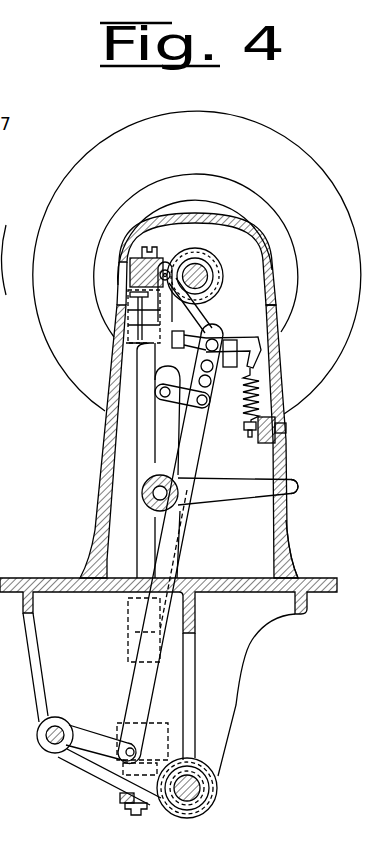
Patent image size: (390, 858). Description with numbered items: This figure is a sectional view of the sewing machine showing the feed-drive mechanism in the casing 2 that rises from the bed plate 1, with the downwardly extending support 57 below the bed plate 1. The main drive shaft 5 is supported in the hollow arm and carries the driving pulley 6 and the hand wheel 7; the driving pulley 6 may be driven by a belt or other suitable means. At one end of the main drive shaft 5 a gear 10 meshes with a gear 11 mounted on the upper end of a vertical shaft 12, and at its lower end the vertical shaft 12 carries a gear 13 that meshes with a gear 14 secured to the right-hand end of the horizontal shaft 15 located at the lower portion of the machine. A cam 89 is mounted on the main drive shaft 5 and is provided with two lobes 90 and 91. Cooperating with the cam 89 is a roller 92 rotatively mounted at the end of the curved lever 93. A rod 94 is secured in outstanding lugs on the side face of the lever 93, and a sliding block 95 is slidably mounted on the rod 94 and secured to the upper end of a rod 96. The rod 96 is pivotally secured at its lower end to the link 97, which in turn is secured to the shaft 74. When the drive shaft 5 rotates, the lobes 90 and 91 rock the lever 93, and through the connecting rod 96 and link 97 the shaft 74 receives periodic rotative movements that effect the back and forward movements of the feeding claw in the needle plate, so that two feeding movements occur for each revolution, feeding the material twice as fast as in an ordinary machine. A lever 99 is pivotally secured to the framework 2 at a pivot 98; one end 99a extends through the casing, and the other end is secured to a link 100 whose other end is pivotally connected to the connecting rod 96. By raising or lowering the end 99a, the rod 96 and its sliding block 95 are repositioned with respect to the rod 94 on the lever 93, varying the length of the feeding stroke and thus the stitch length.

The bed plate 1 is at (33, 576).
The casing 2 is at (290, 538).
The main drive shaft 5 is at (204, 277).
The driving pulley 6 is at (265, 202).
The hand wheel 7 is at (285, 139).
The gear 10 is at (222, 264).
The gear 11 is at (128, 257).
The vertical shaft 12 is at (104, 447).
The gear 13 is at (118, 797).
The gear 14 is at (218, 785).
The horizontal shaft 15 is at (199, 797).
The downwardly extending support 57 is at (247, 665).
The shaft 74 is at (47, 742).
The cam 89 is at (194, 252).
The lobe 90 is at (214, 262).
The lobe 91 is at (170, 262).
The roller 92 is at (148, 277).
The curved lever 93 is at (187, 323).
The rod 94 is at (261, 342).
The sliding block 95 is at (226, 340).
The rod 96 is at (198, 455).
The link 97 is at (98, 740).
The pivot 98 is at (156, 494).
The lever 99 is at (228, 494).
The end of lever 99a is at (298, 484).
The link 100 is at (163, 390).